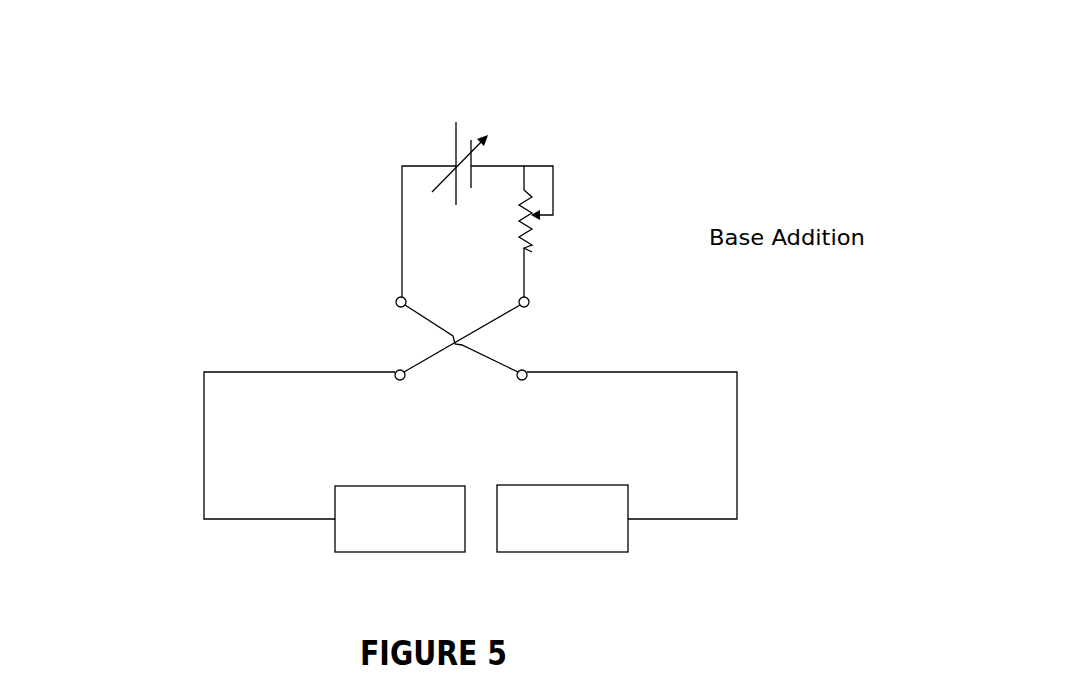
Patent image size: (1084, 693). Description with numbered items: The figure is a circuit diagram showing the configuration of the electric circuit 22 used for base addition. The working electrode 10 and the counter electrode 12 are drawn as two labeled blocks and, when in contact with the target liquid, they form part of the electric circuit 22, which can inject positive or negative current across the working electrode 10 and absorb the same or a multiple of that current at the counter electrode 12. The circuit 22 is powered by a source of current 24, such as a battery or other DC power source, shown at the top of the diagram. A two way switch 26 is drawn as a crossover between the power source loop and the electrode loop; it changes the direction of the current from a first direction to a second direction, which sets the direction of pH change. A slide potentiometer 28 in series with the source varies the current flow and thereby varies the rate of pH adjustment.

The working electrode 10 is at (334, 546).
The counter electrode 12 is at (602, 545).
The electric circuit 22 is at (388, 237).
The source of current 24 is at (428, 141).
The two way switch 26 is at (386, 321).
The slide potentiometer 28 is at (580, 190).